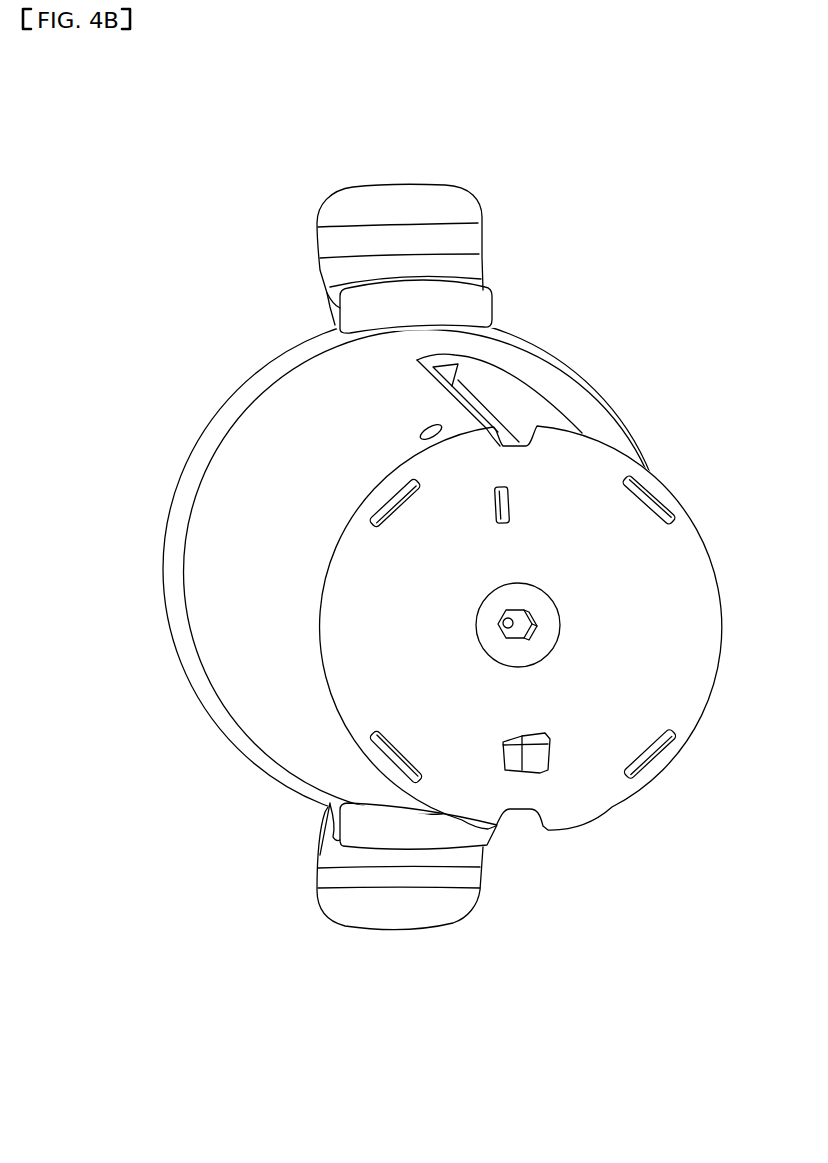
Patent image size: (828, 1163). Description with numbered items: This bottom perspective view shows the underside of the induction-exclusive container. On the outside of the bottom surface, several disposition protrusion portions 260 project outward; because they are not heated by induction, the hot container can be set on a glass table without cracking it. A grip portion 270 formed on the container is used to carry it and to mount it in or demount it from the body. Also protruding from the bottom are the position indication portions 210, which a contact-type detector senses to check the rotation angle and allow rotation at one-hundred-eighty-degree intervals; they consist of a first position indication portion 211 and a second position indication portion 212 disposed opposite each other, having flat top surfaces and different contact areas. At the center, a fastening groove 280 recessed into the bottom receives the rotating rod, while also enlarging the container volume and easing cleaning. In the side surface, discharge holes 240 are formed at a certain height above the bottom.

The position indication portions 210 is at (521, 473).
The first position indication portion 211 is at (503, 487).
The second position indication portion 212 is at (533, 758).
The discharge holes 240 is at (442, 427).
The disposition protrusion portions 260 is at (387, 490).
The grip portion 270 is at (405, 905).
The fastening groove 280 is at (505, 623).